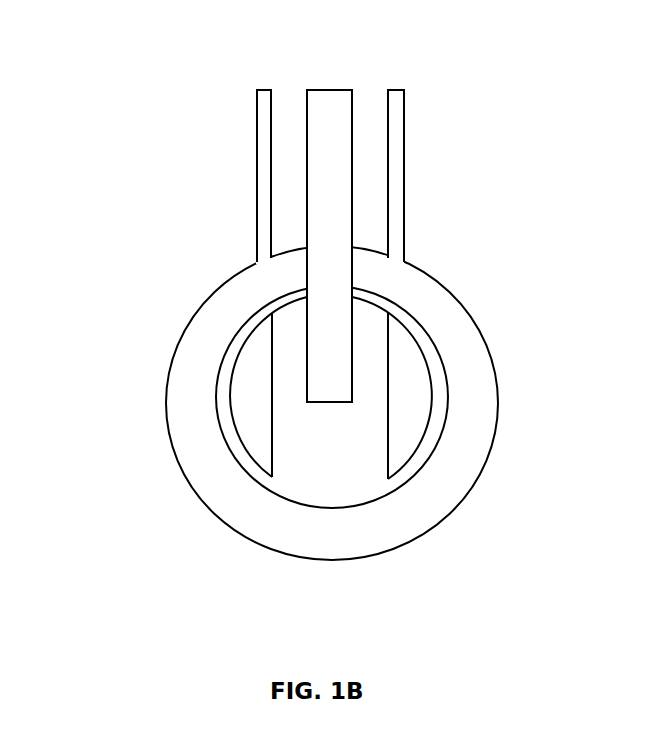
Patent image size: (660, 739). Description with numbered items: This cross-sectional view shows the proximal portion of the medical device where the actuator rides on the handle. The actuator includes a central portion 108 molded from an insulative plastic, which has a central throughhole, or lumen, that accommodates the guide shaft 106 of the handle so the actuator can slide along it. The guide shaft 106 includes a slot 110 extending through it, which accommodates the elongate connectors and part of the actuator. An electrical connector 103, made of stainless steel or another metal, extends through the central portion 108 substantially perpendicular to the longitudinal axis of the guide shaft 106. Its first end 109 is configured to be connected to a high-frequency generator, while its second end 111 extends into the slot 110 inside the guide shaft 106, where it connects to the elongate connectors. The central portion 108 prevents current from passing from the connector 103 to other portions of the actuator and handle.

The electrical connector 103 is at (333, 203).
The guide shaft 106 is at (408, 410).
The central portion 108 is at (263, 186).
The first end 109 is at (329, 96).
The slot 110 is at (302, 423).
The second end 111 is at (330, 379).